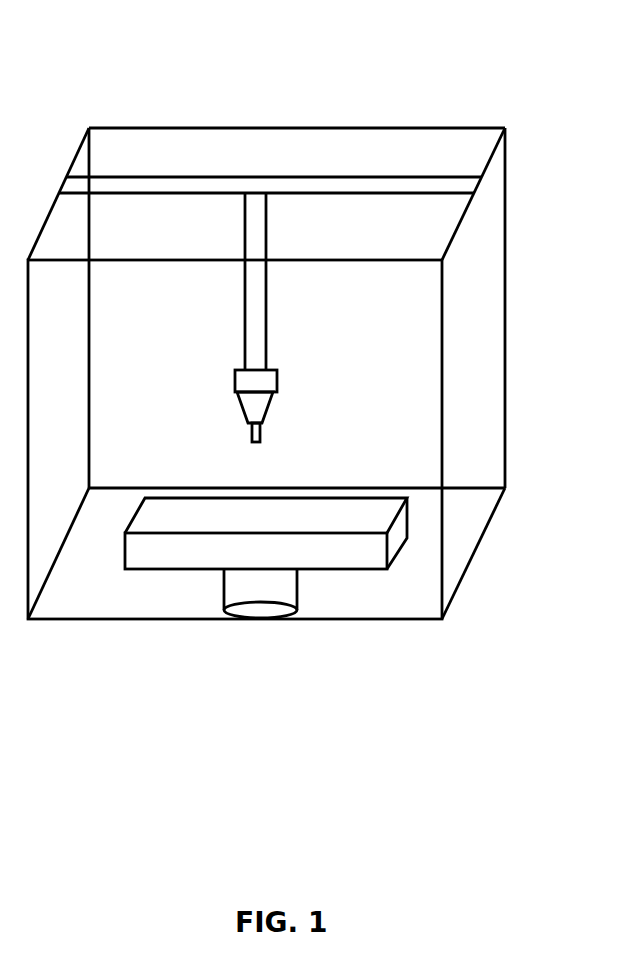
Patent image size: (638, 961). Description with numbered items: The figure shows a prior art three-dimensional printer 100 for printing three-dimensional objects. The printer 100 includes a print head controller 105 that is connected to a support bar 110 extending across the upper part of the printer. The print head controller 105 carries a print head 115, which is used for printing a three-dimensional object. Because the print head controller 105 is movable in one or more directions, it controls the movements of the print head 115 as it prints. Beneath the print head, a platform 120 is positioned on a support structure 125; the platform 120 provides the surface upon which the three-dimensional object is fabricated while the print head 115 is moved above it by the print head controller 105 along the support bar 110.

The 3D printer 100 is at (468, 80).
The print head controller 105 is at (265, 317).
The support bar 110 is at (448, 177).
The 3D print head 115 is at (252, 443).
The platform 120 is at (123, 558).
The support structure 125 is at (298, 598).